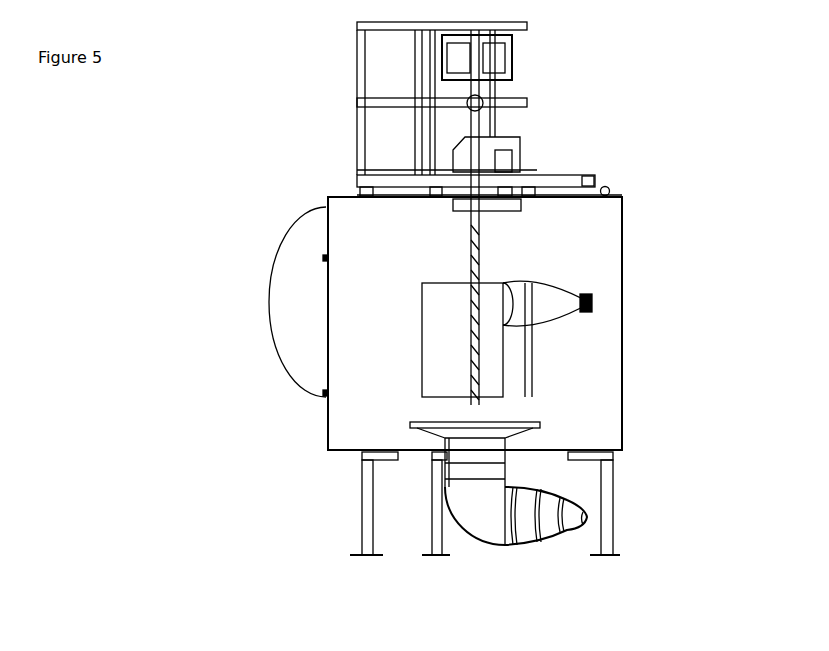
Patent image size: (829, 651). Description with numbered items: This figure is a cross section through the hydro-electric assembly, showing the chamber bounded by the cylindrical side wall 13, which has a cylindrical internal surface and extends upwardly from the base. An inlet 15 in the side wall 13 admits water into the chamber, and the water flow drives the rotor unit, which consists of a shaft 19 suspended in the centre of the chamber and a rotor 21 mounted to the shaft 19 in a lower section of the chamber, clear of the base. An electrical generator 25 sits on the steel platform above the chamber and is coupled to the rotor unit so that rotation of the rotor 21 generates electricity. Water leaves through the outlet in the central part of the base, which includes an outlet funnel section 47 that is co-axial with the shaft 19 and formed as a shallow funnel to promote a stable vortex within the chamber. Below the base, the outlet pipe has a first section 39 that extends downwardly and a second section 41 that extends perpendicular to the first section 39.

The cylindrical side wall 13 is at (622, 243).
The inlet 15 is at (560, 305).
The shaft 19 is at (467, 160).
The rotor 21 is at (443, 342).
The electrical generator 25 is at (490, 57).
The first section 39 is at (478, 472).
The second section 41 is at (522, 522).
The outlet funnel section 47 is at (495, 432).